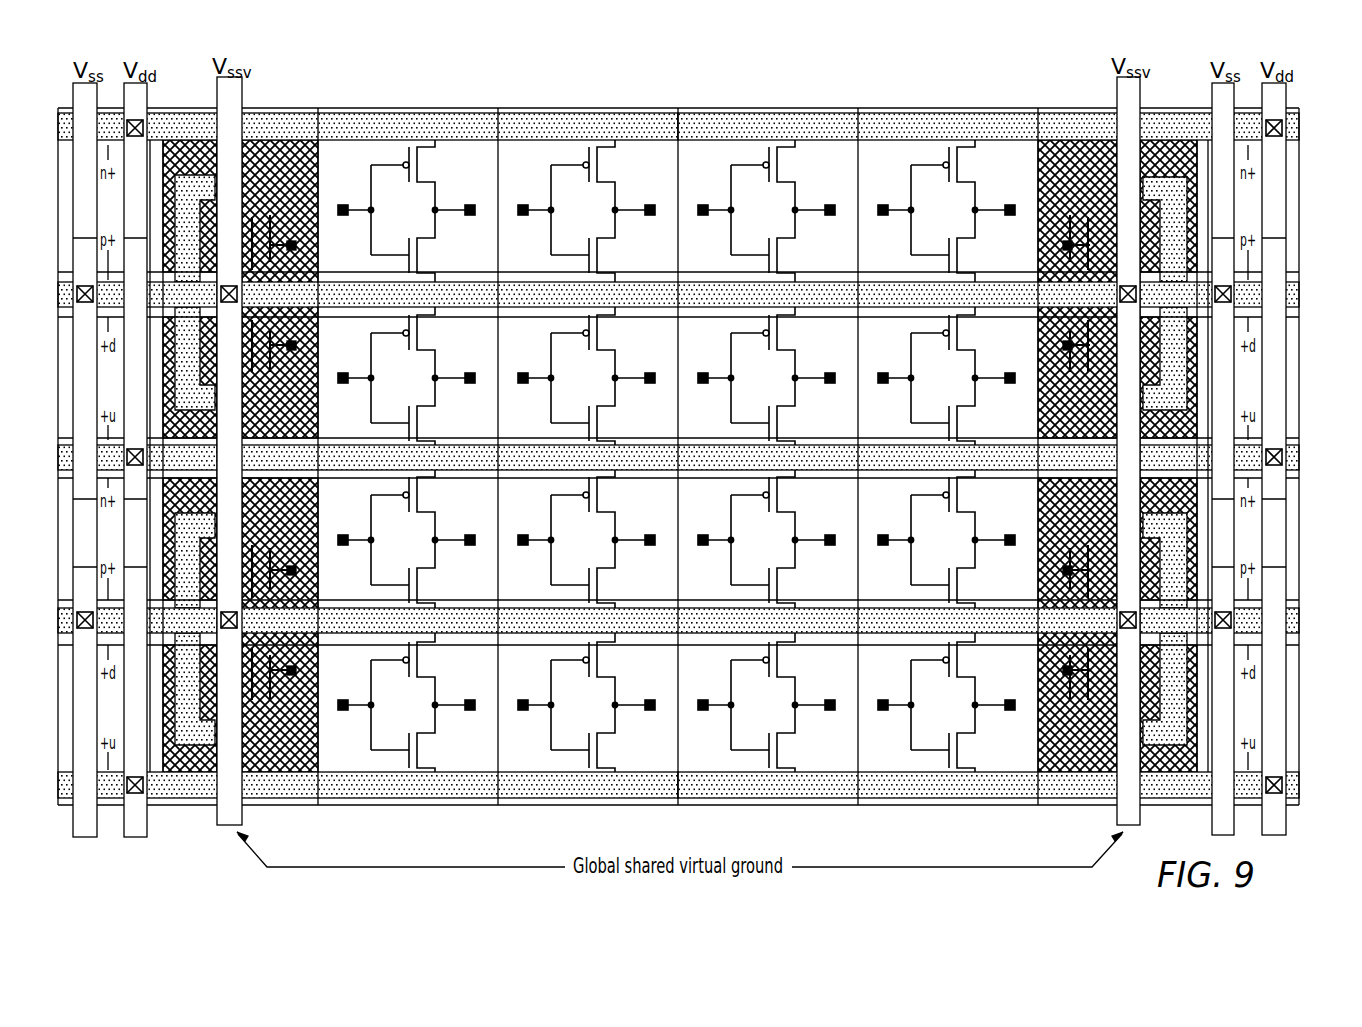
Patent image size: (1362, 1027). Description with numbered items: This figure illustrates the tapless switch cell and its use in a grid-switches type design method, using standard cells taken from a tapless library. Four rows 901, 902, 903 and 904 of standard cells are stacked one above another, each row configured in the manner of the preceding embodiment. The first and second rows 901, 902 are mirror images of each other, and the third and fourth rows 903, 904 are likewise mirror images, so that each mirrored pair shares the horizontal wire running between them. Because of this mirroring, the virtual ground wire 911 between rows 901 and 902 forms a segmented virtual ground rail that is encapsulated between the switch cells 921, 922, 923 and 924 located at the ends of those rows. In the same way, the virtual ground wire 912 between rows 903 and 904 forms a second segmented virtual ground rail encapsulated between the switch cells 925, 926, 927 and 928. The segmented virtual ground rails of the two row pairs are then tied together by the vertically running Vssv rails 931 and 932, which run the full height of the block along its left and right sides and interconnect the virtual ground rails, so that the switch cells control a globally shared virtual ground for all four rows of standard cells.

The row of standard cells 901 is at (1314, 203).
The row of standard cells 902 is at (1314, 390).
The row of standard cells 903 is at (1314, 519).
The row of standard cells 904 is at (1314, 711).
The virtual ground wire 911 is at (1300, 293).
The virtual ground wire 912 is at (1300, 621).
The switch cell 921 is at (275, 112).
The switch cell 922 is at (302, 413).
The switch cell 923 is at (1076, 112).
The switch cell 924 is at (1093, 418).
The switch cell 925 is at (302, 516).
The switch cell 926 is at (284, 806).
The switch cell 927 is at (1087, 511).
The switch cell 928 is at (1082, 806).
The Vssv rail 931 is at (217, 92).
The Vssv rail 932 is at (1140, 92).